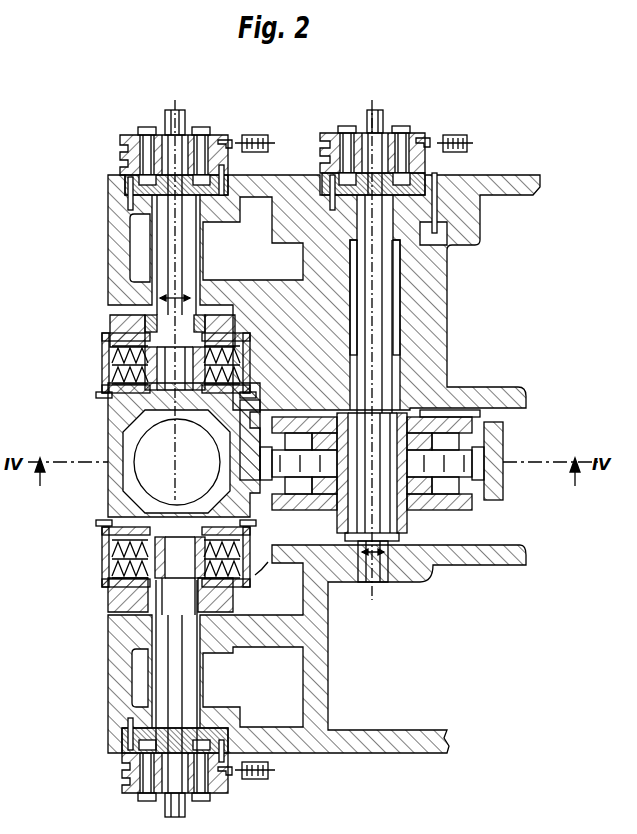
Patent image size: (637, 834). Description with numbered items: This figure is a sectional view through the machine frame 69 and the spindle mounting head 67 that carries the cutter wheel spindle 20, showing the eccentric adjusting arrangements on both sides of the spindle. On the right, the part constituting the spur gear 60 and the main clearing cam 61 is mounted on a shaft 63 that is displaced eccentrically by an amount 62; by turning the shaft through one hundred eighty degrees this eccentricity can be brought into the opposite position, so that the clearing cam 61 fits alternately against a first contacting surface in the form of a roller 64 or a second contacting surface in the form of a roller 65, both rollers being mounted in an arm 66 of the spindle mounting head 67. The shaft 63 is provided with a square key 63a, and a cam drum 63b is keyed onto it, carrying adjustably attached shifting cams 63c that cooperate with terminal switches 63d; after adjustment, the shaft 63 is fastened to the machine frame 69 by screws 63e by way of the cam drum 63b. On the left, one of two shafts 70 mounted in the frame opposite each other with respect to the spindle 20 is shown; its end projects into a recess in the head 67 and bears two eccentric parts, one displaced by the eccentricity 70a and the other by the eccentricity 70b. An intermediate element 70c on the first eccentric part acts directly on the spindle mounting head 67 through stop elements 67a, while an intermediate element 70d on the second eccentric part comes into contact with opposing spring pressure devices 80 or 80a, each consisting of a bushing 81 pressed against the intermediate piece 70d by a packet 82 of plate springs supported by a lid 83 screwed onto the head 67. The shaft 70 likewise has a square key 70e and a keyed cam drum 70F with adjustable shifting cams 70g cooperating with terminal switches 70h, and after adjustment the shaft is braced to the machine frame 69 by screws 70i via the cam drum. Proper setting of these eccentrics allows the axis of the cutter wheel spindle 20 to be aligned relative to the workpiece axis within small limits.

The cutter wheel spindle 20 is at (142, 476).
The spur gear 60 is at (412, 530).
The main clearing cam 61 is at (440, 418).
The eccentricity 62 is at (373, 556).
The shaft 63 is at (385, 286).
The square key 63a is at (380, 120).
The cam drum 63b is at (335, 140).
The shifting cams 63c is at (423, 138).
The terminal switches 63d is at (455, 135).
The screws 63e is at (348, 126).
The roller 64 is at (447, 465).
The roller 65 is at (296, 465).
The arm 66 is at (498, 490).
The spindle mounting head 67 is at (112, 440).
The stop elements 67a is at (212, 317).
The machine frame 69 is at (124, 186).
The shafts 70 is at (158, 212).
The eccentricity 70a is at (166, 298).
The eccentricity 70b is at (110, 350).
The intermediate element 70c is at (197, 315).
The intermediate element 70d is at (186, 392).
The square key 70e is at (175, 128).
The cam drum 70F is at (124, 147).
The shifting cams 70g is at (230, 140).
The terminal switches 70h is at (256, 135).
The screws 70i is at (146, 128).
The spring pressure device 80 is at (102, 568).
The spring pressure device 80a is at (254, 579).
The bushing 81 is at (158, 605).
The packet of plate springs 82 is at (102, 530).
The lid 83 is at (106, 590).